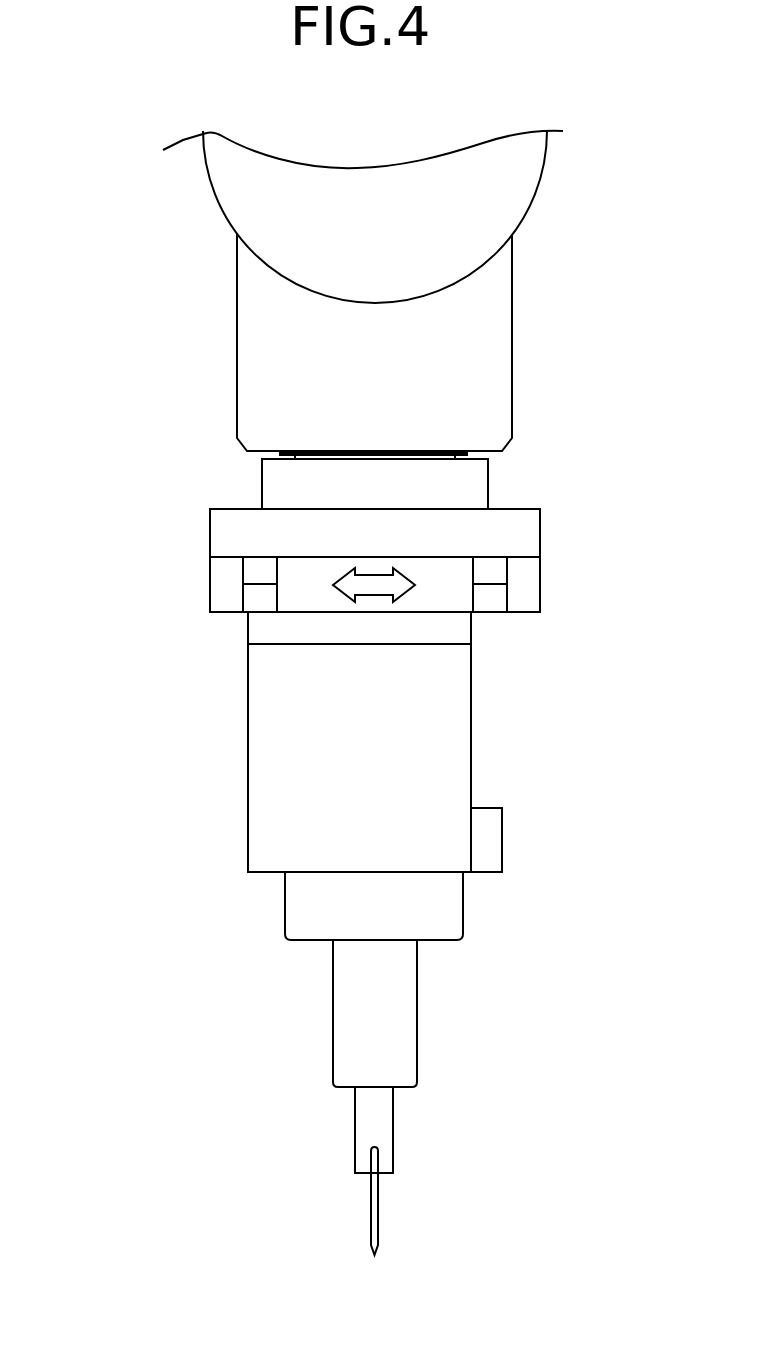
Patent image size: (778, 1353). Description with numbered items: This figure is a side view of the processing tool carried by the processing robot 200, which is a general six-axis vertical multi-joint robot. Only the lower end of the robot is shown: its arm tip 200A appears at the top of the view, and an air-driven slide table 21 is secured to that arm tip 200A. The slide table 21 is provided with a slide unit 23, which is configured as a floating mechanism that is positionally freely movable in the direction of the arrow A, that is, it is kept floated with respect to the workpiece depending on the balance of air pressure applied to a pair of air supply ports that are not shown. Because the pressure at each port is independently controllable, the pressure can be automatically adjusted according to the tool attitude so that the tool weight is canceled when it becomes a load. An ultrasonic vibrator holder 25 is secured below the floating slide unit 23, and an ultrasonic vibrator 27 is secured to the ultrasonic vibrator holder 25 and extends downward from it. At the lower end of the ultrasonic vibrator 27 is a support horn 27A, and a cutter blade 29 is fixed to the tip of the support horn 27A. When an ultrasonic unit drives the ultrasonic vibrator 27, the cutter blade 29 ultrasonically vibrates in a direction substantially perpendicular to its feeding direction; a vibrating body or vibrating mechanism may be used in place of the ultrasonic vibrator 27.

The processing robot 200 is at (205, 189).
The arm tip 200A is at (252, 335).
The slide table 21 is at (265, 528).
The slide unit 23 is at (292, 575).
The arrow A is at (337, 586).
The ultrasonic vibrator holder 25 is at (247, 782).
The ultrasonic vibrator 27 is at (333, 1007).
The support horn 27A is at (355, 1127).
The cutter blade 29 is at (370, 1223).